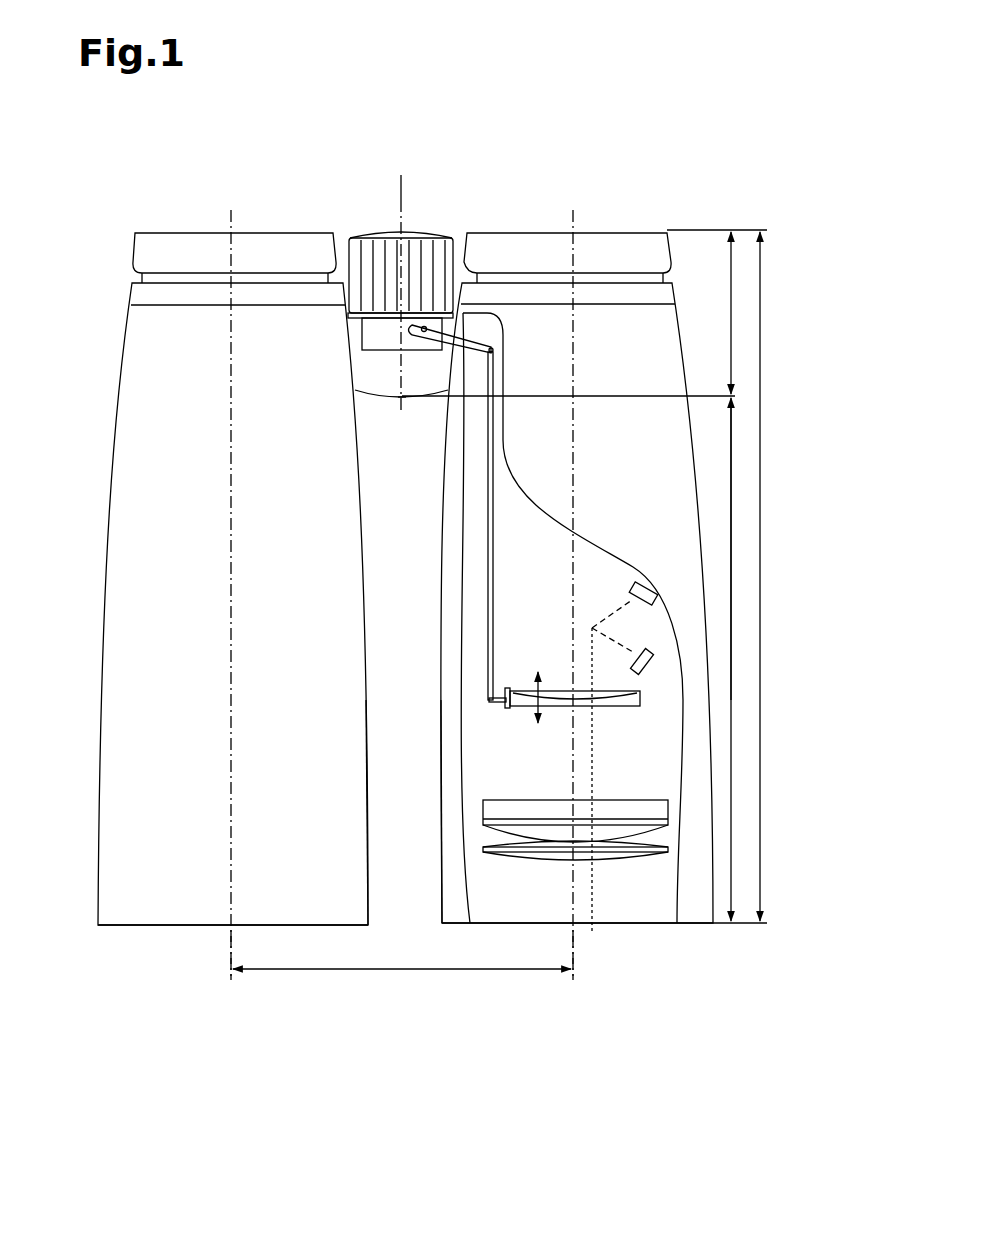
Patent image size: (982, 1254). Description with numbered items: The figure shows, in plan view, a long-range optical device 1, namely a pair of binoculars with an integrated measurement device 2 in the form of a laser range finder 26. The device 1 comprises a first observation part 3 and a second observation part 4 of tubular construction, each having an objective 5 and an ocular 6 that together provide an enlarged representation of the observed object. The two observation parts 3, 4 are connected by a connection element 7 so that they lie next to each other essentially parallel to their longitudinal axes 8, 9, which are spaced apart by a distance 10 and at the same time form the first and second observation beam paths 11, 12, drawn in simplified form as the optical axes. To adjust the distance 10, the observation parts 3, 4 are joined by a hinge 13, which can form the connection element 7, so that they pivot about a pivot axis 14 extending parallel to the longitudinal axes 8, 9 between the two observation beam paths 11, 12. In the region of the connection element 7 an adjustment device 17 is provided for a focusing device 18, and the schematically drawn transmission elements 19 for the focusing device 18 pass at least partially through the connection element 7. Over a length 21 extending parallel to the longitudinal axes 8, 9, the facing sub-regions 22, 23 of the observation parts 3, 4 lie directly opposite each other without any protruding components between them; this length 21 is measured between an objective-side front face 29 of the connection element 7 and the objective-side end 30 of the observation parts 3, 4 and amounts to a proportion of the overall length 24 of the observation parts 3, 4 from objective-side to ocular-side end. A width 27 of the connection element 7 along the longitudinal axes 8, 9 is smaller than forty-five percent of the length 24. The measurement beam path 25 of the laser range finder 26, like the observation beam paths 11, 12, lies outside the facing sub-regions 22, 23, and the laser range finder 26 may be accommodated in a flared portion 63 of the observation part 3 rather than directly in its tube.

The long-range optical device 1 is at (676, 108).
The measurement device 2 is at (636, 622).
The first observation part 3 is at (700, 462).
The second observation part 4 is at (106, 503).
The objective 5 is at (182, 942).
The ocular 6 is at (280, 214).
The connection element 7 is at (386, 415).
The longitudinal axis 8 is at (230, 955).
The longitudinal axis 9 is at (575, 952).
The distance 10 is at (413, 972).
The first observation beam path 11 is at (229, 384).
The second observation beam path 12 is at (576, 426).
The hinge 13 is at (371, 403).
The pivot axis 14 is at (399, 195).
The adjustment device 17 is at (418, 230).
The focusing device 18 is at (645, 717).
The transmission elements 19 is at (458, 352).
The length 21 is at (737, 778).
The sub-region 22 is at (377, 800).
The sub-region 23 is at (437, 796).
The length of the observation parts 24 is at (762, 283).
The measurement beam path 25 is at (593, 904).
The laser range finder 26 is at (614, 600).
The width of the connection element 27 is at (726, 315).
The objective-side front face 29 is at (407, 400).
The objective-side end 30 is at (693, 925).
The flared portion 63 is at (300, 930).